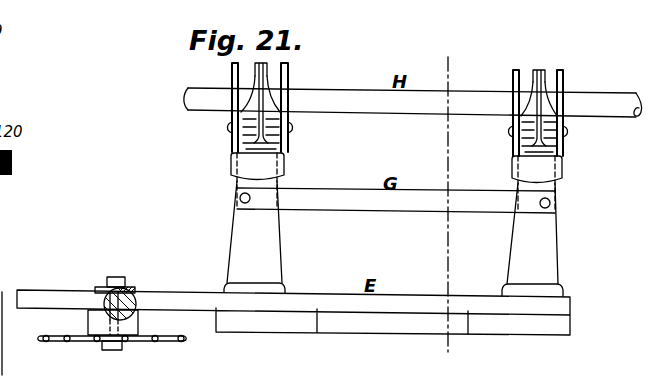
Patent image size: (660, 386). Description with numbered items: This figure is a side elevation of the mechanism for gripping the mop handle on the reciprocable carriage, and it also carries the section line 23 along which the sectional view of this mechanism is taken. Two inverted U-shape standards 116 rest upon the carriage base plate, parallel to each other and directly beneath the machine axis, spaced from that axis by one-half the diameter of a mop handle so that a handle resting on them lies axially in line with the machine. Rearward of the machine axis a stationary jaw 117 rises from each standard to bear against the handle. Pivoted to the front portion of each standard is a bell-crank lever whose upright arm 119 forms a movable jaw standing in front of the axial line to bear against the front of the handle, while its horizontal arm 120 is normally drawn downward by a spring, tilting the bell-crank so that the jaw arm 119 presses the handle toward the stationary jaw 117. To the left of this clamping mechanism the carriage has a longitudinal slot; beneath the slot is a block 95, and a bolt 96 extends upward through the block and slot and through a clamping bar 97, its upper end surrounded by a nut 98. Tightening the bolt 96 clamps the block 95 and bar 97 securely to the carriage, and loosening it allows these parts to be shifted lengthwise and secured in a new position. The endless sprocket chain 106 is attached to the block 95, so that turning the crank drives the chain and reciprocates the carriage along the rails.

The section line 23— 23 is at (445, 205).
The block 95 is at (139, 322).
The bolt 96 is at (139, 300).
The clamping bar 97 is at (134, 289).
The nut 98 is at (110, 278).
The endless sprocket chain 106 is at (143, 342).
The inverted U-shape standard 116 is at (269, 236).
The stationary jaw 117 is at (266, 84).
The upright arm 119 is at (232, 74).
The horizontal arm 120 is at (283, 160).